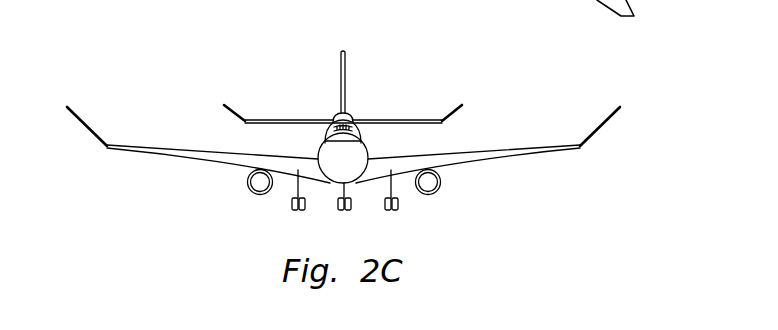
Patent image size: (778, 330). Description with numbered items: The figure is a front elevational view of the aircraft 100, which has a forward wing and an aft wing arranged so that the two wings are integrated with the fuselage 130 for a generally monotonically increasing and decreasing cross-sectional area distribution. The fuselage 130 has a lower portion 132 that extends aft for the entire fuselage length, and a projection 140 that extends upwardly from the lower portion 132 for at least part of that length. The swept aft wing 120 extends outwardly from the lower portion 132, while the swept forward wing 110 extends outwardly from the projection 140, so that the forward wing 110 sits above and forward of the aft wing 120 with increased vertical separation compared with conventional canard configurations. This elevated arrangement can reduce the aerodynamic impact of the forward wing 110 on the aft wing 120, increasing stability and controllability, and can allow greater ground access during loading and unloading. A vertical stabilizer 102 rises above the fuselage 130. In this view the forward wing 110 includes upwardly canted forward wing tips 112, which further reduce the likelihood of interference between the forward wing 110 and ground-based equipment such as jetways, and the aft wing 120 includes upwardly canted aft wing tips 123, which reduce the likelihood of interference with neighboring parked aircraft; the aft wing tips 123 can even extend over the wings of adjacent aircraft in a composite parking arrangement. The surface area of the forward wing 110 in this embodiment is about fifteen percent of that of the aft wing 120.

The aircraft 100 is at (233, 50).
The vertical stabilizer 102 is at (347, 87).
The forward wing 110 is at (392, 120).
The forward wing tips 112 is at (462, 108).
The aft wing 120 is at (493, 163).
The aft wing tips 123 is at (600, 130).
The fuselage 130 is at (308, 153).
The lower portion 132 is at (353, 170).
The projection 140 is at (327, 130).